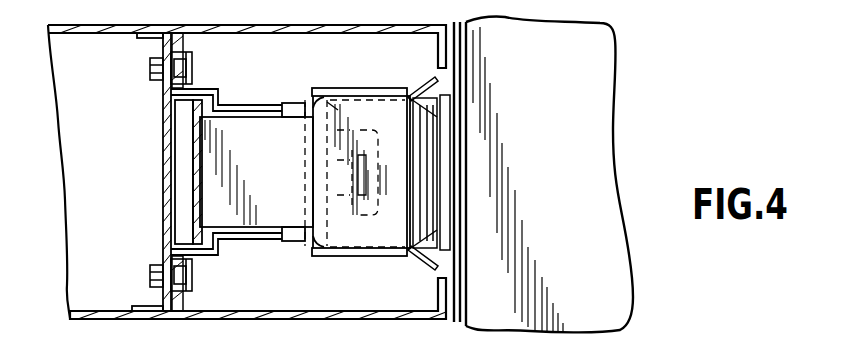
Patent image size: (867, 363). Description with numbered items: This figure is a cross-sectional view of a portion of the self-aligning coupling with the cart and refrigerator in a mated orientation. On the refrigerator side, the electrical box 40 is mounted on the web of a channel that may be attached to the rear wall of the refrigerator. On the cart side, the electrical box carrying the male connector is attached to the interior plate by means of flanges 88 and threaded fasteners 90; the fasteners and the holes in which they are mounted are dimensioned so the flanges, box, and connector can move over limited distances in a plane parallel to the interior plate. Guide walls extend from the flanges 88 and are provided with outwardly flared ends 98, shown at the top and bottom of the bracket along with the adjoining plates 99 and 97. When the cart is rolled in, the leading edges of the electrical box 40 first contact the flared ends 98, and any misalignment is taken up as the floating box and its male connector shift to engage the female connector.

The electrical box 40 is at (441, 90).
The flanges 88 is at (167, 87).
The threaded fasteners 90 is at (152, 77).
The bottom plate of bracket 97 is at (342, 258).
The outwardly flared ends 98 is at (423, 87).
The top plate of bracket 99 is at (330, 88).